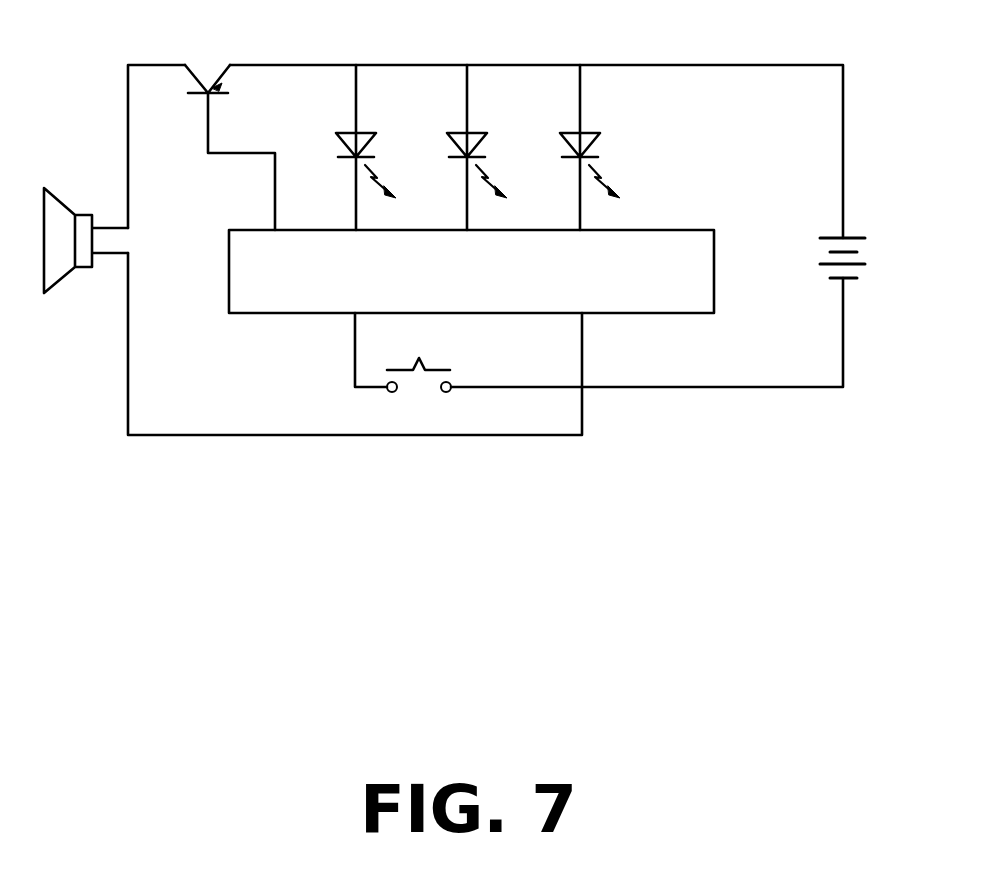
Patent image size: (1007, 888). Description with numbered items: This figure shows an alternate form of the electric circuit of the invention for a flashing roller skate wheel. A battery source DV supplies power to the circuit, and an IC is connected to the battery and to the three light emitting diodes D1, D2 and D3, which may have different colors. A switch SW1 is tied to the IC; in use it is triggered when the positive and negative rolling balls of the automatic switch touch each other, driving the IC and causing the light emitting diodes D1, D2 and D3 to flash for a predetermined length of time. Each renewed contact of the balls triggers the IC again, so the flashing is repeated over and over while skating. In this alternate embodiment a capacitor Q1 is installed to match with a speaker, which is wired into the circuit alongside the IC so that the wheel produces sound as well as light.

The capacitor Q1 is at (230, 123).
The light emitting diode D1 is at (372, 147).
The light emitting diode D2 is at (482, 147).
The light emitting diode D3 is at (596, 147).
The element IC is at (471, 271).
The element SW1 is at (432, 352).
The battery / DC voltage source DV is at (867, 258).